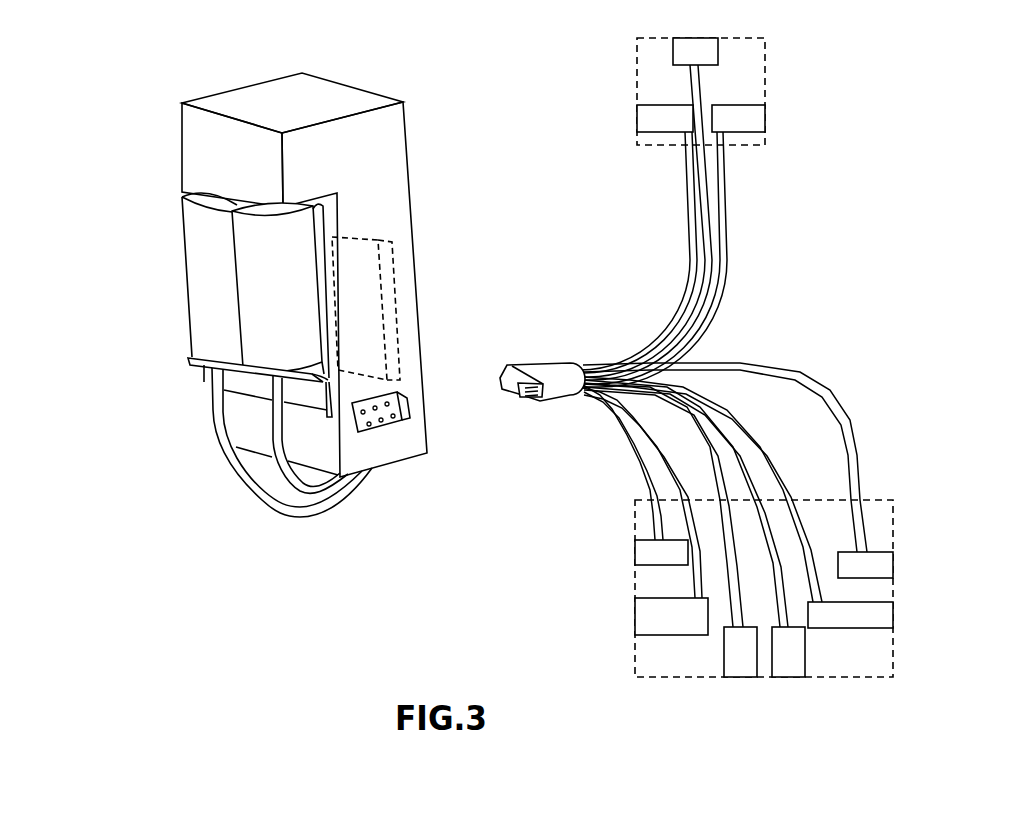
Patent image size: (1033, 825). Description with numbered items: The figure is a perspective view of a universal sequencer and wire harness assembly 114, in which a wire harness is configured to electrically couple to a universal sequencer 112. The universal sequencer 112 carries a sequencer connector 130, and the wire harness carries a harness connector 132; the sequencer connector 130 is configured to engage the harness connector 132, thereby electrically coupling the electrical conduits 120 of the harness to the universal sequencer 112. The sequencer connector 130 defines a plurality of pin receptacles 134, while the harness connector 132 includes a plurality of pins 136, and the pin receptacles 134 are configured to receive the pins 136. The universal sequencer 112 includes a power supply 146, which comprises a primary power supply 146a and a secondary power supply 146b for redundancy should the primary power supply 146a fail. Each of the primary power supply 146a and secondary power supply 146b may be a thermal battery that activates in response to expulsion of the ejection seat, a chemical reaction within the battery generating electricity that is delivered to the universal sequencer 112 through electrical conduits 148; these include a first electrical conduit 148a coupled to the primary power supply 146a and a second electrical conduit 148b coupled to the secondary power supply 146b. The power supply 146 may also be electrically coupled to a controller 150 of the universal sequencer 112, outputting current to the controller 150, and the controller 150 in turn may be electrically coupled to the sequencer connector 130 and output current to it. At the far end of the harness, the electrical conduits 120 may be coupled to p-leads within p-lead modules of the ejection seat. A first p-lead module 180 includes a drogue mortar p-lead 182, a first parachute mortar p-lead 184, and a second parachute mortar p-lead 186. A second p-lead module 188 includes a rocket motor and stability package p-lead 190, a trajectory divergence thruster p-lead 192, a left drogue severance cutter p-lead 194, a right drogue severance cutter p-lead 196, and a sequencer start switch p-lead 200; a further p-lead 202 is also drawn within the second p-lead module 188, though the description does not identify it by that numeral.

The universal sequencer and wire harness assembly 114 is at (106, 96).
The universal sequencer 112 is at (346, 166).
The power supply 146 is at (129, 240).
The primary power supply 146a is at (223, 259).
The secondary power supply 146b is at (255, 311).
The electrical conduits 148 is at (133, 435).
The first electrical conduit 148a is at (232, 452).
The second electrical conduit 148b is at (280, 465).
The controller 150 is at (387, 282).
The sequencer connector 130 is at (414, 402).
The pin receptacles 134 is at (404, 417).
The electrical conduits 120 is at (700, 223).
The harness connector 132 is at (550, 372).
The pins 136 is at (519, 397).
The first p-lead module 180 is at (764, 62).
The drogue mortar p-lead 182 is at (709, 61).
The first parachute mortar p-lead 184 is at (750, 127).
The second parachute mortar p-lead 186 is at (677, 127).
The second p-lead module 188 is at (892, 517).
The rocket motor and stability package (STAPAC) p-lead 190 is at (864, 624).
The trajectory divergence thruster p-lead 192 is at (675, 562).
The left drogue severance cutter p-lead 194 is at (685, 626).
The right drogue severance cutter p-lead 196 is at (879, 574).
The sequencer start switch p-lead 200 is at (753, 661).
The output device 202 is at (801, 661).